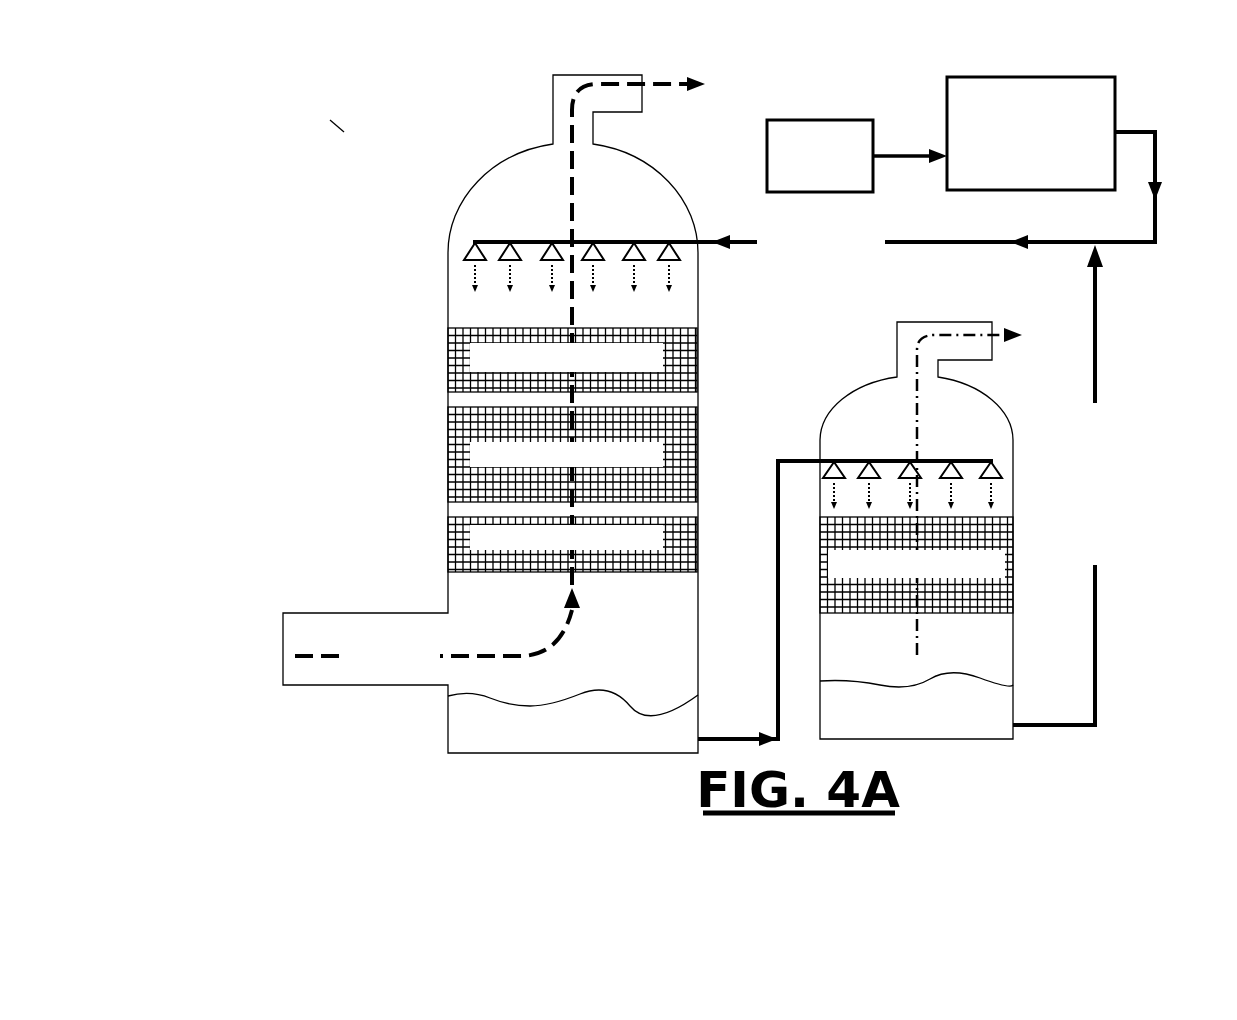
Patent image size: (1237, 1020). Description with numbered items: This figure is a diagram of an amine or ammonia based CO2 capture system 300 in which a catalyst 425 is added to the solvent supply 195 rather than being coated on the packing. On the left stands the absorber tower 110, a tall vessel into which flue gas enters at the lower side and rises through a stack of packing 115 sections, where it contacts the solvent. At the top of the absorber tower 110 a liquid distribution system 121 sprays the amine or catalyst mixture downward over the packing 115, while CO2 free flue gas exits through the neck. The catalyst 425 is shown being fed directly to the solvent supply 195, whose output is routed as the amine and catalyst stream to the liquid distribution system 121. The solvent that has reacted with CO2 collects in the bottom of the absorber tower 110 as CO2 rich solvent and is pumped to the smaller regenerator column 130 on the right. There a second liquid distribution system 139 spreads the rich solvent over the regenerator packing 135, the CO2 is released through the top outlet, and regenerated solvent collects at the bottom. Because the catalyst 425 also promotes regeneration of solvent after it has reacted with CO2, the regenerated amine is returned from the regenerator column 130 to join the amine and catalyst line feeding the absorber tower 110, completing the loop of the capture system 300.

The CO2 capture system 300 is at (340, 126).
The absorber tower 110 is at (447, 277).
The packing 115 is at (473, 343).
The liquid distribution system 121 is at (685, 278).
The regenerator column 130 is at (855, 427).
The regenerator packing 135 is at (995, 580).
The regenerator spray nozzles 139 is at (1006, 501).
The solvent supply 195 is at (968, 102).
The catalyst 425 is at (756, 165).